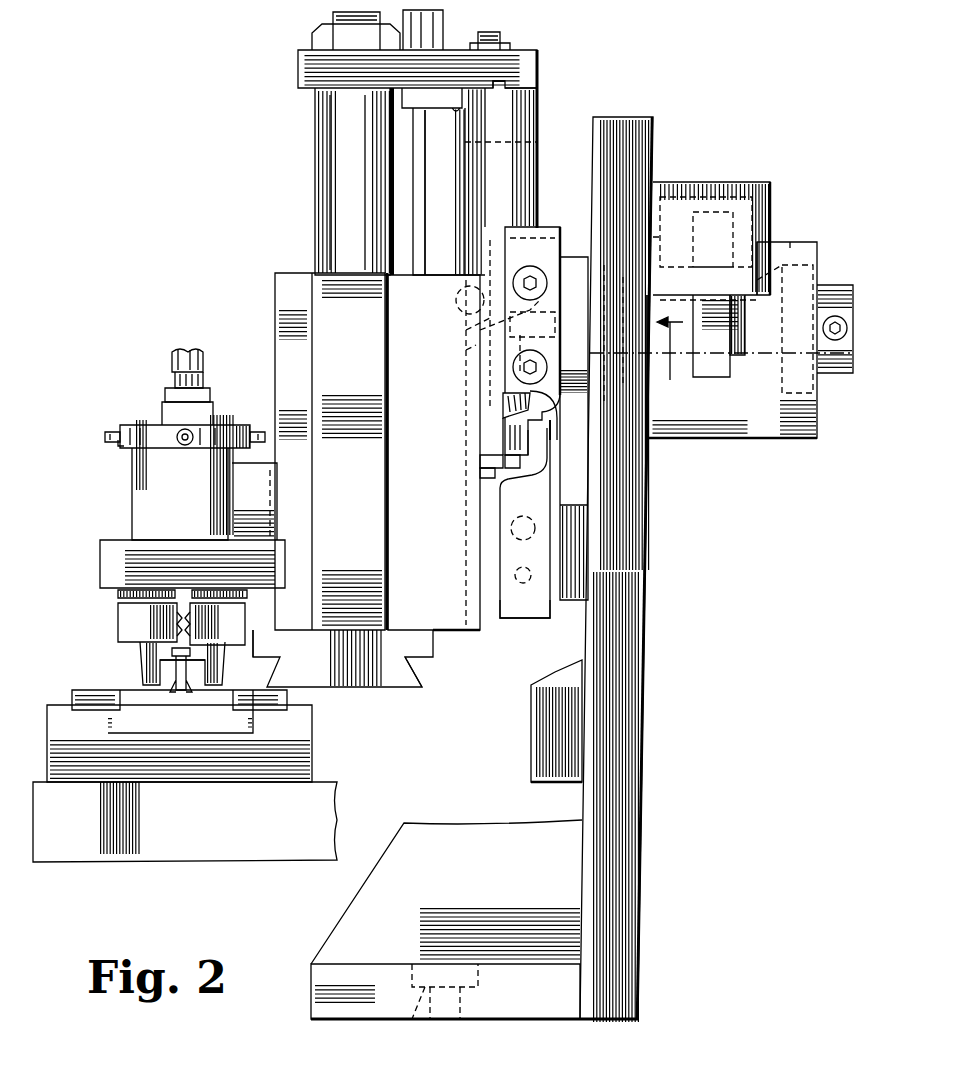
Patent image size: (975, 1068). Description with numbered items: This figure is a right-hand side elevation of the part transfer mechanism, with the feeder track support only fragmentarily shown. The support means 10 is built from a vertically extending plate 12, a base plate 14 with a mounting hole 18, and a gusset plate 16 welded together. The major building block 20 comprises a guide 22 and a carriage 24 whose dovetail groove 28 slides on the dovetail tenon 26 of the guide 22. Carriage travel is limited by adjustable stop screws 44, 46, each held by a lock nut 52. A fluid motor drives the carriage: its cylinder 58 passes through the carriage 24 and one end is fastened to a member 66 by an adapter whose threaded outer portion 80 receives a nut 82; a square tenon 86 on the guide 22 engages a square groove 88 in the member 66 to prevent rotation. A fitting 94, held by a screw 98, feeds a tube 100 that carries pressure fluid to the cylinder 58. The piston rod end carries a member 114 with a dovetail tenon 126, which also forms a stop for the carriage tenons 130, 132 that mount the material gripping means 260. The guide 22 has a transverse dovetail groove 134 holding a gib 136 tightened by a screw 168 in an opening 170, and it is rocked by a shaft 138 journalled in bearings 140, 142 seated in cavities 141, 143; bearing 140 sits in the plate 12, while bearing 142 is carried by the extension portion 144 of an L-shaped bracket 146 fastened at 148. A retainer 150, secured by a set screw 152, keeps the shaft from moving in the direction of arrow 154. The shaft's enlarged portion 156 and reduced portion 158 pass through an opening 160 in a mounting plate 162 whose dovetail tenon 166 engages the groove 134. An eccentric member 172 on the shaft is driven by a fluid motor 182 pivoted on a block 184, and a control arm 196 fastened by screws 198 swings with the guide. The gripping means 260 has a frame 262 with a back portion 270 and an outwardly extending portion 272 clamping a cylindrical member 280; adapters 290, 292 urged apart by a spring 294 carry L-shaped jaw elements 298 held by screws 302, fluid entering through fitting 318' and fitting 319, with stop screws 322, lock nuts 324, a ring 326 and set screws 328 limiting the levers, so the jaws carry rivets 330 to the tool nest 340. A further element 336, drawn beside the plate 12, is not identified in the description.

The support means 10 is at (658, 724).
The vertically extending plate 12 is at (617, 625).
The base plate 14 is at (531, 989).
The gusset plate 16 is at (468, 896).
The mounting hole 18 is at (422, 990).
The major building block 20 is at (550, 92).
The guide 22 is at (507, 176).
The carriage 24 is at (437, 608).
The dovetail tenon 26 is at (473, 190).
The dovetail groove 28 is at (468, 294).
The adjustable stop screw 44 is at (500, 34).
The adjustable stop screw 46 is at (478, 474).
The lock nut 52 is at (509, 46).
The cylinder 58 is at (340, 223).
The member 66 is at (310, 76).
The outer portion 80 is at (333, 16).
The nut 82 is at (322, 40).
The square tenon 86 is at (504, 86).
The square groove 88 is at (506, 92).
The fitting 94 is at (445, 43).
The screw 98 is at (452, 112).
The tube 100 is at (418, 218).
The member 114 is at (315, 643).
The dovetail tenon 126 is at (398, 676).
The dovetail tenon 130 is at (280, 357).
The dovetail tenon 132 is at (358, 490).
The dovetail groove 134 is at (527, 260).
The gib 136 is at (503, 408).
The shaft 138 is at (742, 330).
The bearing 140 is at (721, 352).
The cavity 141 is at (629, 348).
The bearing 142 is at (818, 264).
The cavity 143 is at (790, 244).
The extension portion 144 is at (798, 424).
The L-shaped bracket 146 is at (716, 424).
The fastening location 148 is at (652, 412).
The retainer 150 is at (831, 292).
The set screw 152 is at (823, 327).
The arrow 154 is at (672, 358).
The enlarged portion 156 is at (573, 268).
The reduced portion 158 is at (470, 352).
The opening 160 is at (468, 333).
The mounting plate 162 is at (552, 424).
The dovetail tenon 166 is at (503, 396).
The screw 168 is at (508, 462).
The opening 170 is at (548, 440).
The eccentric member 172 is at (710, 342).
The fluid motor 182 is at (747, 181).
The block 184 is at (680, 194).
The control arm 196 is at (530, 601).
The screws 198 is at (514, 279).
The material gripping means 260 is at (125, 515).
The frame 262 is at (237, 568).
The back portion 270 is at (270, 514).
The outwardly extending portion 272 is at (137, 562).
The cylindrical member 280 is at (195, 522).
The adapter 290 is at (237, 648).
The adapter 292 is at (122, 647).
The spring 294 is at (177, 620).
The L-shaped jaw elements 298 is at (153, 673).
The screws 302 is at (117, 615).
The fitting 318' is at (164, 392).
The fitting 319 is at (178, 360).
The adjustable stop screw 322 is at (105, 437).
The lock nut 324 is at (117, 448).
The ring 326 is at (158, 437).
The set screws 328 is at (181, 447).
The rivets 330 is at (182, 690).
The support block 336 is at (552, 733).
The tool nest 340 is at (108, 863).